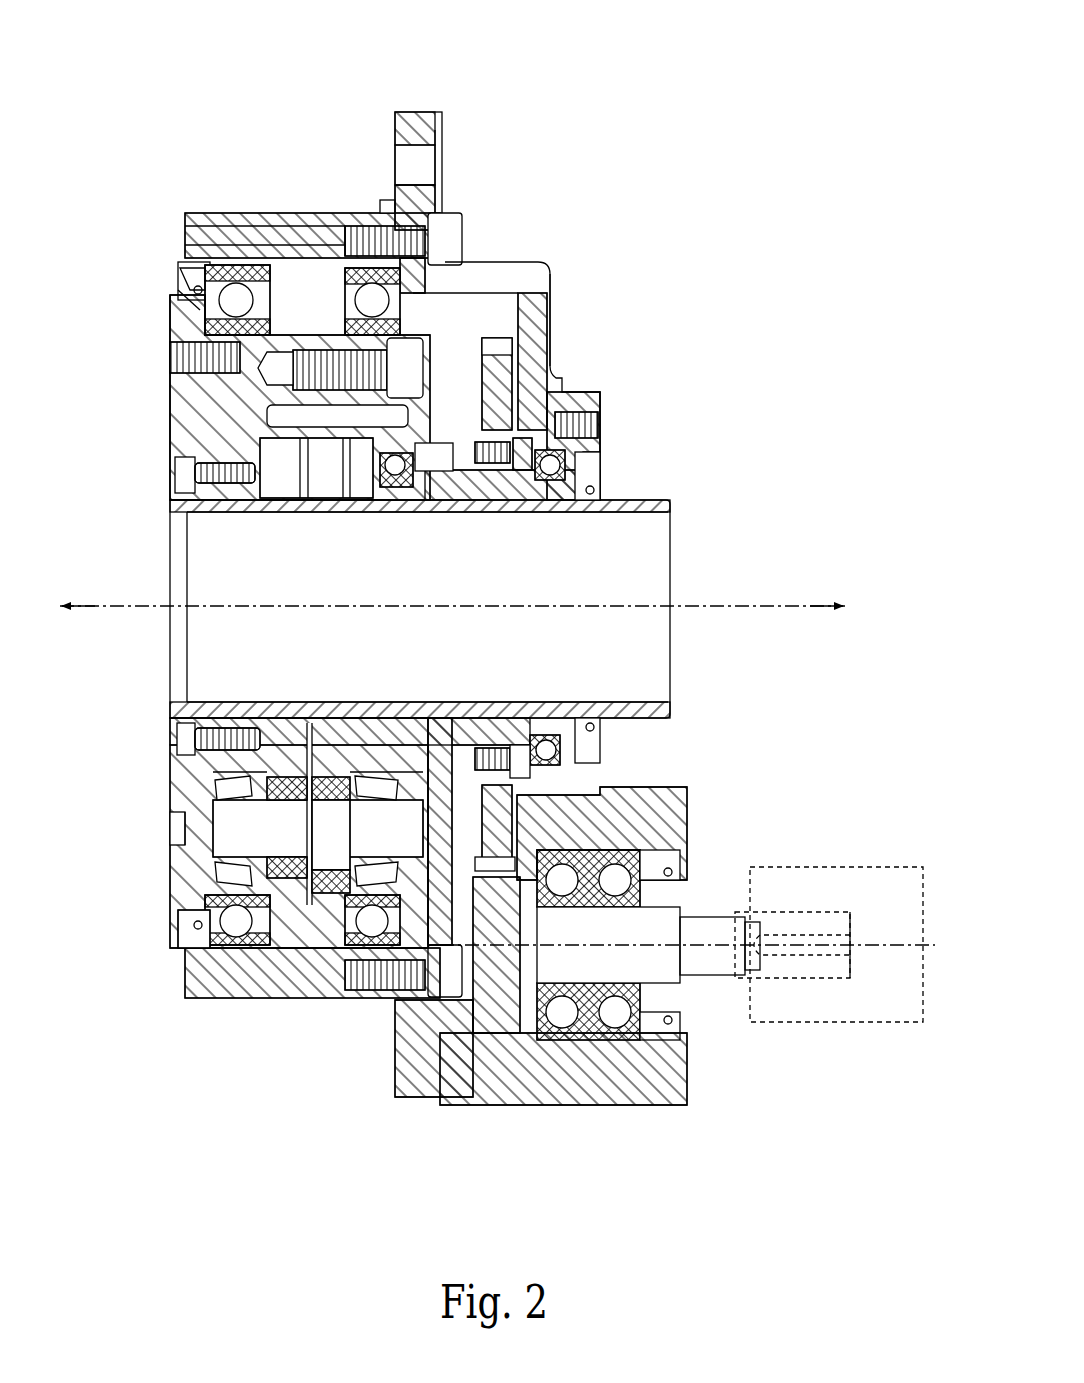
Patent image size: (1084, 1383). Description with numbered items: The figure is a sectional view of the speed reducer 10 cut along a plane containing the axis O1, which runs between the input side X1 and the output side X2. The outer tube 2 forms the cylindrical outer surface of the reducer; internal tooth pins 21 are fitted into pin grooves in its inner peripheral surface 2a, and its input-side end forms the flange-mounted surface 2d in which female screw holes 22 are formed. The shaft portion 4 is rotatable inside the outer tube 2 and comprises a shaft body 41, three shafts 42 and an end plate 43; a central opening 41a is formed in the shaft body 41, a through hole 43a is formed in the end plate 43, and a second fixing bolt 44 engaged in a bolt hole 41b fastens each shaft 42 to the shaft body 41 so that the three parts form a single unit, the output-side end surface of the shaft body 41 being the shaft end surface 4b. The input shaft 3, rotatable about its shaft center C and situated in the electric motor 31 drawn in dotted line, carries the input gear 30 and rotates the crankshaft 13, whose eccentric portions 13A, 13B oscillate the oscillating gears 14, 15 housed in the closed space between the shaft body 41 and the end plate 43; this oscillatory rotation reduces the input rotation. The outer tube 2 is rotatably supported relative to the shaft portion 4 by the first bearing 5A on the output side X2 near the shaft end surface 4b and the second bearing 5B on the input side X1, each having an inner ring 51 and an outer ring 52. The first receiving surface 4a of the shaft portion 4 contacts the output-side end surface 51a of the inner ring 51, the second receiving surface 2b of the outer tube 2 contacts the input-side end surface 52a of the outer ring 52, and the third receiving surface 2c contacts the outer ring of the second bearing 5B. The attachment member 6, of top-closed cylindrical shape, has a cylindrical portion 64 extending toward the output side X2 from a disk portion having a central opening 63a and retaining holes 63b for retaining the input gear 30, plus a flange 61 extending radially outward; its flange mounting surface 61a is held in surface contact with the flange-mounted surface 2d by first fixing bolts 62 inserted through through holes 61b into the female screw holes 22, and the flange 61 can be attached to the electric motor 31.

The outer tube 2 is at (192, 210).
The inner peripheral surface 2a is at (290, 250).
The second receiving surface 2b is at (240, 240).
The third receiving surface 2c is at (348, 256).
The flange-mounted surface 2d is at (386, 205).
The input shaft 3 is at (795, 985).
The shaft portion 4 is at (168, 392).
The first receiving surface 4a is at (180, 276).
The shaft end surface 4b is at (168, 412).
The first bearing 5A is at (205, 262).
The second bearing 5B is at (362, 266).
The attachment member 6 is at (556, 338).
The speed reducer 10 is at (568, 100).
The crankshaft 13 is at (242, 905).
The eccentric portion 13A is at (282, 966).
The eccentric portion 13B is at (332, 960).
The first oscillating gear 14 is at (236, 766).
The second oscillating gear 15 is at (280, 805).
The internal tooth pins 21 is at (262, 978).
The female screw holes 22 is at (408, 230).
The input gear 30 is at (690, 805).
The electric motor 31 is at (838, 1030).
The shaft body 41 is at (195, 425).
The central opening 41a is at (192, 500).
The bolt hole 41b is at (185, 467).
The shafts 42 is at (320, 352).
The end plate 43 is at (515, 340).
The through hole 43a is at (296, 495).
The second fixing bolt 44 is at (500, 380).
The inner ring 51 is at (200, 330).
The output-side end surface 51a is at (190, 300).
The outer ring 52 is at (195, 265).
The input-side end surface 52a is at (250, 260).
The flange 61 is at (418, 140).
The flange mounting surface 61a is at (395, 182).
The through holes 61b is at (440, 225).
The first fixing bolts 62 is at (458, 232).
The opening 63a is at (602, 480).
The retaining holes 63b is at (565, 1045).
The cylindrical portion 64 is at (498, 272).
The shaft center C is at (882, 1022).
The axis O1 is at (700, 612).
The input side X1 is at (815, 624).
The output side X2 is at (95, 624).